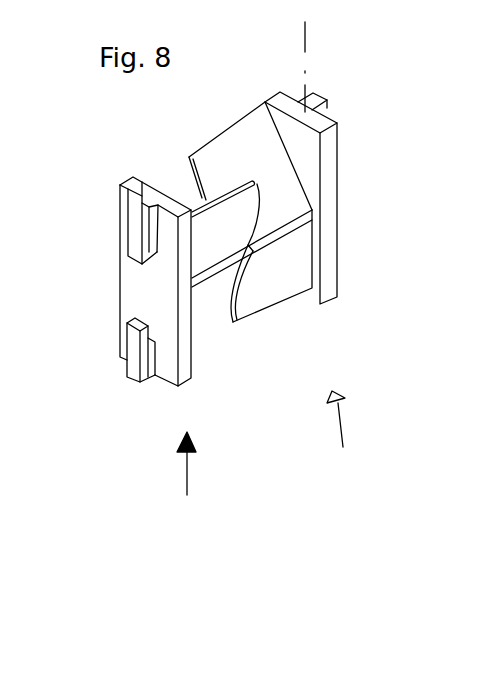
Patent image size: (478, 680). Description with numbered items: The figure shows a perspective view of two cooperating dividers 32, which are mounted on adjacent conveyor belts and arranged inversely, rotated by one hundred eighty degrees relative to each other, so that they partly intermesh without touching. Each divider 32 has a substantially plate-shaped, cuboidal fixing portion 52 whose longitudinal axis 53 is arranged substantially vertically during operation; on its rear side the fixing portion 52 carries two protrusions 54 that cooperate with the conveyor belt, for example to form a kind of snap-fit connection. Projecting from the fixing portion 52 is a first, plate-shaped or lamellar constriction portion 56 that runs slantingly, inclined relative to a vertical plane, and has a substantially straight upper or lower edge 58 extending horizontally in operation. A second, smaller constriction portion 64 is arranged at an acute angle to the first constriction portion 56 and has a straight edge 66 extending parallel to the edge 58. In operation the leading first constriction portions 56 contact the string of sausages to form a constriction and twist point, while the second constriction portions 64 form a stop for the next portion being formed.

The divider 32 is at (268, 476).
The fixing portion 52 is at (128, 287).
The longitudinal axis 53 is at (315, 37).
The protrusions 54 is at (132, 248).
The first constriction portion 56 is at (215, 245).
The upper or lower edge 58 is at (205, 145).
The second constriction portion 64 is at (189, 274).
The straight edge 66 is at (272, 288).